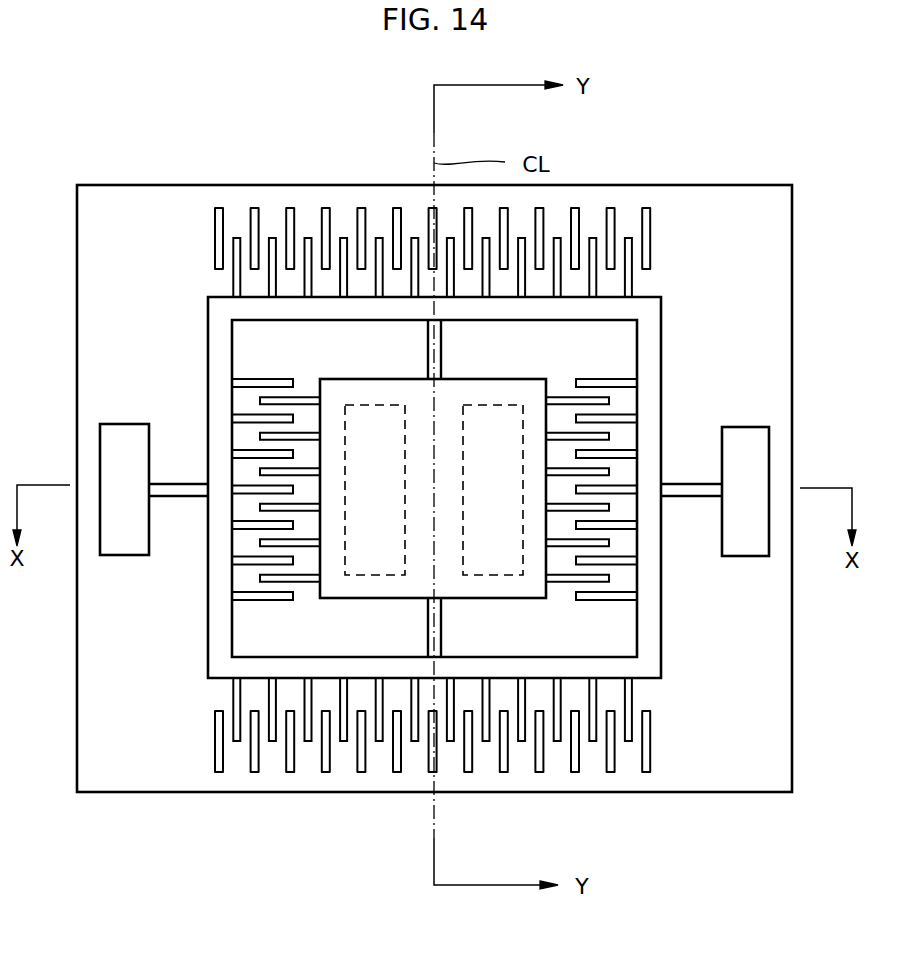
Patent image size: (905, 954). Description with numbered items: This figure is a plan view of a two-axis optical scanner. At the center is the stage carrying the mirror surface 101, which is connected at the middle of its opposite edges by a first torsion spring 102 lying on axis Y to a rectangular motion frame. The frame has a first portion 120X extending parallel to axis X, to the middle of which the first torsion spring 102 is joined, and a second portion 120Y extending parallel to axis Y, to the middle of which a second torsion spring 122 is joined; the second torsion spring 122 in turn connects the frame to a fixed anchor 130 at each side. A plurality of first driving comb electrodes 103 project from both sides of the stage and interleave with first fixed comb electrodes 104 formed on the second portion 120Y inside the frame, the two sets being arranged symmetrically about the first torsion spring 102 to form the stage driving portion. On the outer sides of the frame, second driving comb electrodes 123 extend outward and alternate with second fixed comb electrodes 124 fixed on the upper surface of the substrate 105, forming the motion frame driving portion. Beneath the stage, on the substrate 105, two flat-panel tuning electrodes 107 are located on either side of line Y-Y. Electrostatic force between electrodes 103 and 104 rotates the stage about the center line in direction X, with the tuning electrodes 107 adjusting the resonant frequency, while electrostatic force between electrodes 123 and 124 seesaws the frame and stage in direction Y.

The mirror surface 101 is at (368, 588).
The first torsion spring 102 is at (441, 351).
The first driving comb electrode 103 is at (303, 397).
The first fixed comb electrode 104 is at (280, 380).
The substrate 105 is at (160, 773).
The tuning electrode 107 is at (513, 405).
The first portion of the rectangular motion frame 120X is at (434, 490).
The second portion of the rectangular motion frame 120Y is at (433, 489).
The second torsion spring 122 is at (172, 484).
The second driving comb electrode 123 is at (632, 700).
The second fixed comb electrode 124 is at (650, 745).
The fixed anchor 130 is at (750, 466).